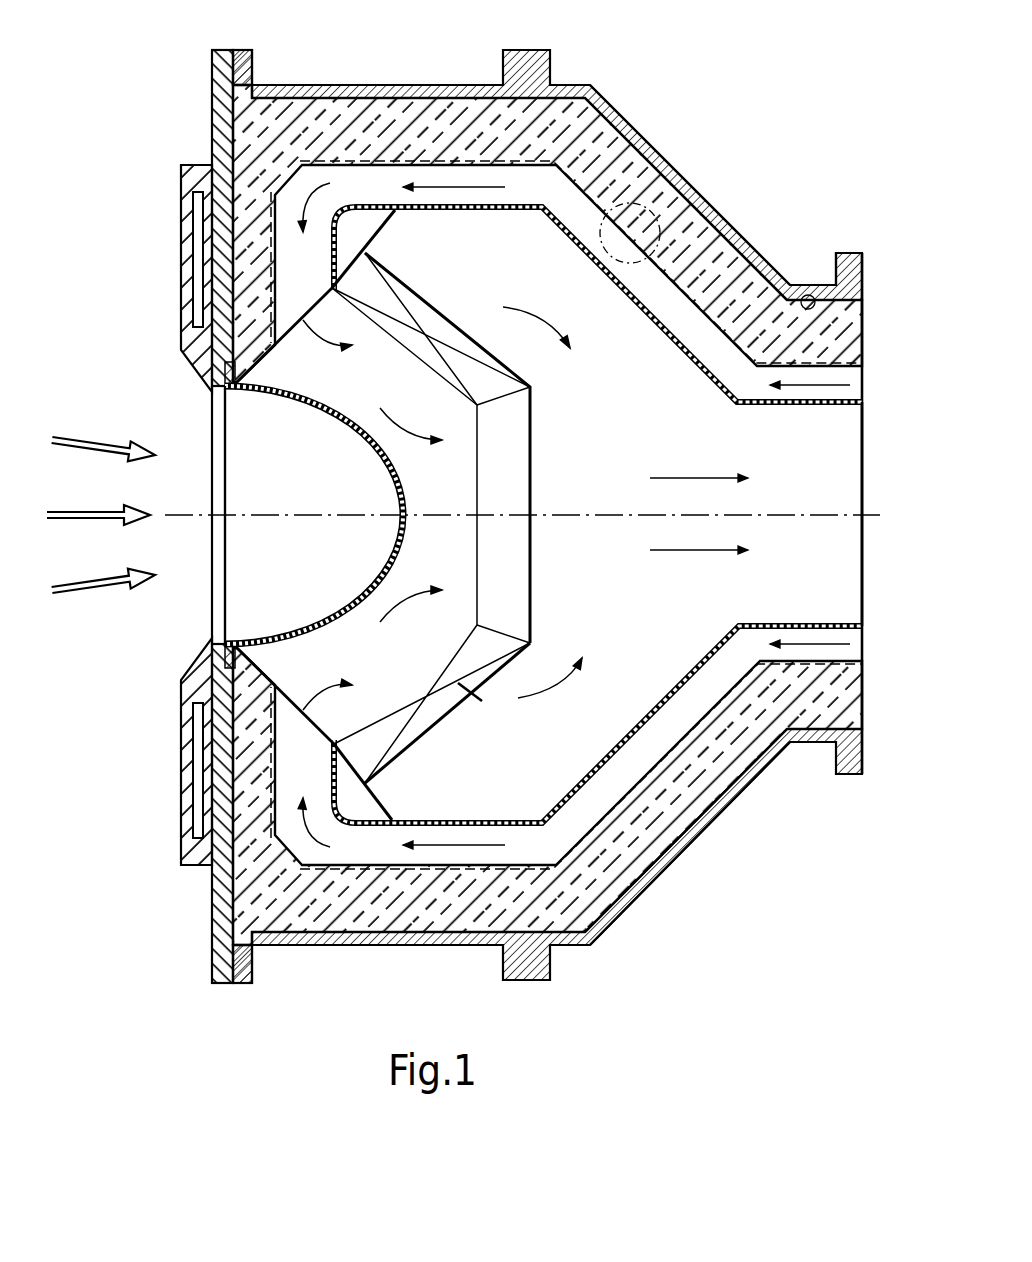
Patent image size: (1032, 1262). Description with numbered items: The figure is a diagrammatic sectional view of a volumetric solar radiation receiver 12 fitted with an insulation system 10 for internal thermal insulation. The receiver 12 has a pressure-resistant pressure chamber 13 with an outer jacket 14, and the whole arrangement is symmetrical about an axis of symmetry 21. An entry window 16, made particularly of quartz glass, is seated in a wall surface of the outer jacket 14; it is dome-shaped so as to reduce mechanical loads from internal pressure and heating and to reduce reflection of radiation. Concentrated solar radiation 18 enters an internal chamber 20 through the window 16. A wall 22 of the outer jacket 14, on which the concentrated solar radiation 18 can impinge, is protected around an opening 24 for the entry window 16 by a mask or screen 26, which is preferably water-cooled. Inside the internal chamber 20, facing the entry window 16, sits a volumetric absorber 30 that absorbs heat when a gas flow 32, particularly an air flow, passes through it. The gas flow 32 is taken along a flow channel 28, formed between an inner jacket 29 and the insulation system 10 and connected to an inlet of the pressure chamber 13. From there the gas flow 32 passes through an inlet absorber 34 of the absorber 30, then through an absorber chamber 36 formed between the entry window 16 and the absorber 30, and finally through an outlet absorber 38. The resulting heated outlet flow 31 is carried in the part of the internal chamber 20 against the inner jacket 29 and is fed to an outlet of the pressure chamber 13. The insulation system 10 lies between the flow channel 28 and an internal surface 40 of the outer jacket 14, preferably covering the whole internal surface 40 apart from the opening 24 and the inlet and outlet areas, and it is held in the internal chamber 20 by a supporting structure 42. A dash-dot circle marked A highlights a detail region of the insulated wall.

The insulation system 10 is at (390, 106).
The volumetric solar radiation receiver 12 is at (743, 824).
The pressure chamber 13 is at (322, 950).
The outer jacket 14 is at (604, 100).
The entry window 16 is at (318, 620).
The concentrated solar radiation 18 is at (82, 592).
The internal chamber 20 is at (512, 790).
The axis of symmetry 21 is at (880, 500).
The wall 22 is at (215, 82).
The opening 24 is at (220, 412).
The mask or screen 26 is at (181, 246).
The flow channel 28 is at (698, 328).
The inner jacket 29 is at (800, 606).
The volumetric absorber 30 is at (470, 692).
The outlet flow 31 is at (679, 476).
The gas flow 32 is at (452, 188).
The inlet absorber 34 is at (333, 276).
The absorber chamber 36 is at (337, 387).
The outlet absorber 38 is at (367, 272).
The internal surface 40 is at (808, 295).
The supporting structure 42 is at (690, 272).
The detail region A is at (640, 205).